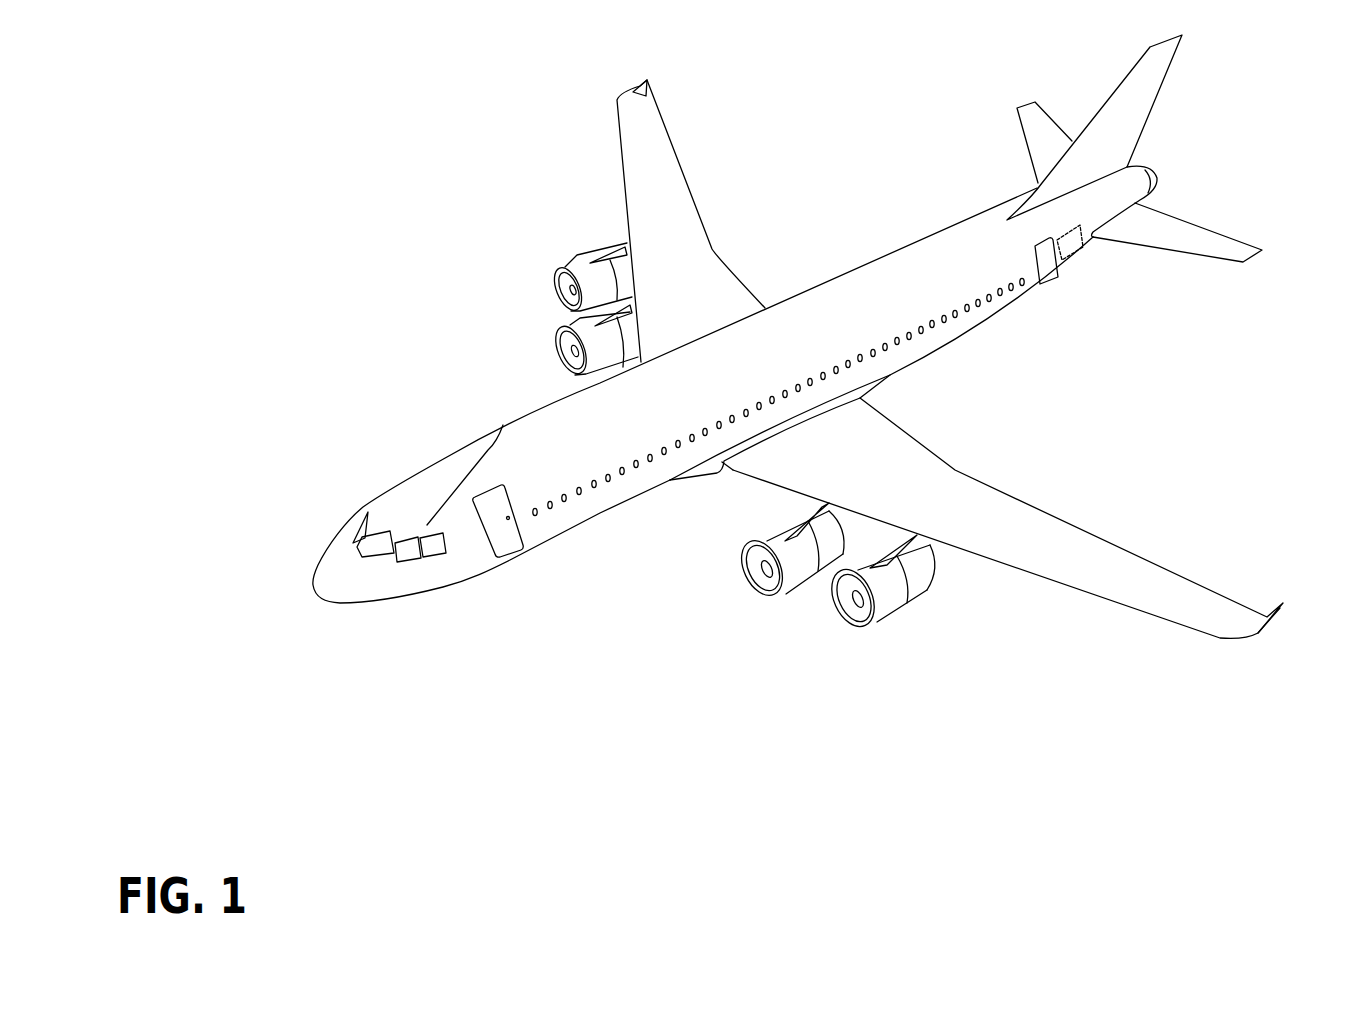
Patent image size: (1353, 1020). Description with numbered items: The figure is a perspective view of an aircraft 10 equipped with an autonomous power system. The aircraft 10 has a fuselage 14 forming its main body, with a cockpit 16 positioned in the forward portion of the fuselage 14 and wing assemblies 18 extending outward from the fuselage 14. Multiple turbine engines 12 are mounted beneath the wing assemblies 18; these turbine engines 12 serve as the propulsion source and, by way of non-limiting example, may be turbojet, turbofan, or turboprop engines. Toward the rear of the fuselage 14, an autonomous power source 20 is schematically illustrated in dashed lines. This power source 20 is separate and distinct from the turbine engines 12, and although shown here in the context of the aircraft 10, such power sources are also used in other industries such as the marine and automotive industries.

The aircraft 10 is at (340, 452).
The turbine engines 12 is at (577, 260).
The fuselage 14 is at (811, 283).
The cockpit 16 is at (503, 425).
The wing assemblies 18 is at (637, 130).
The autonomous power source 20 is at (1081, 241).